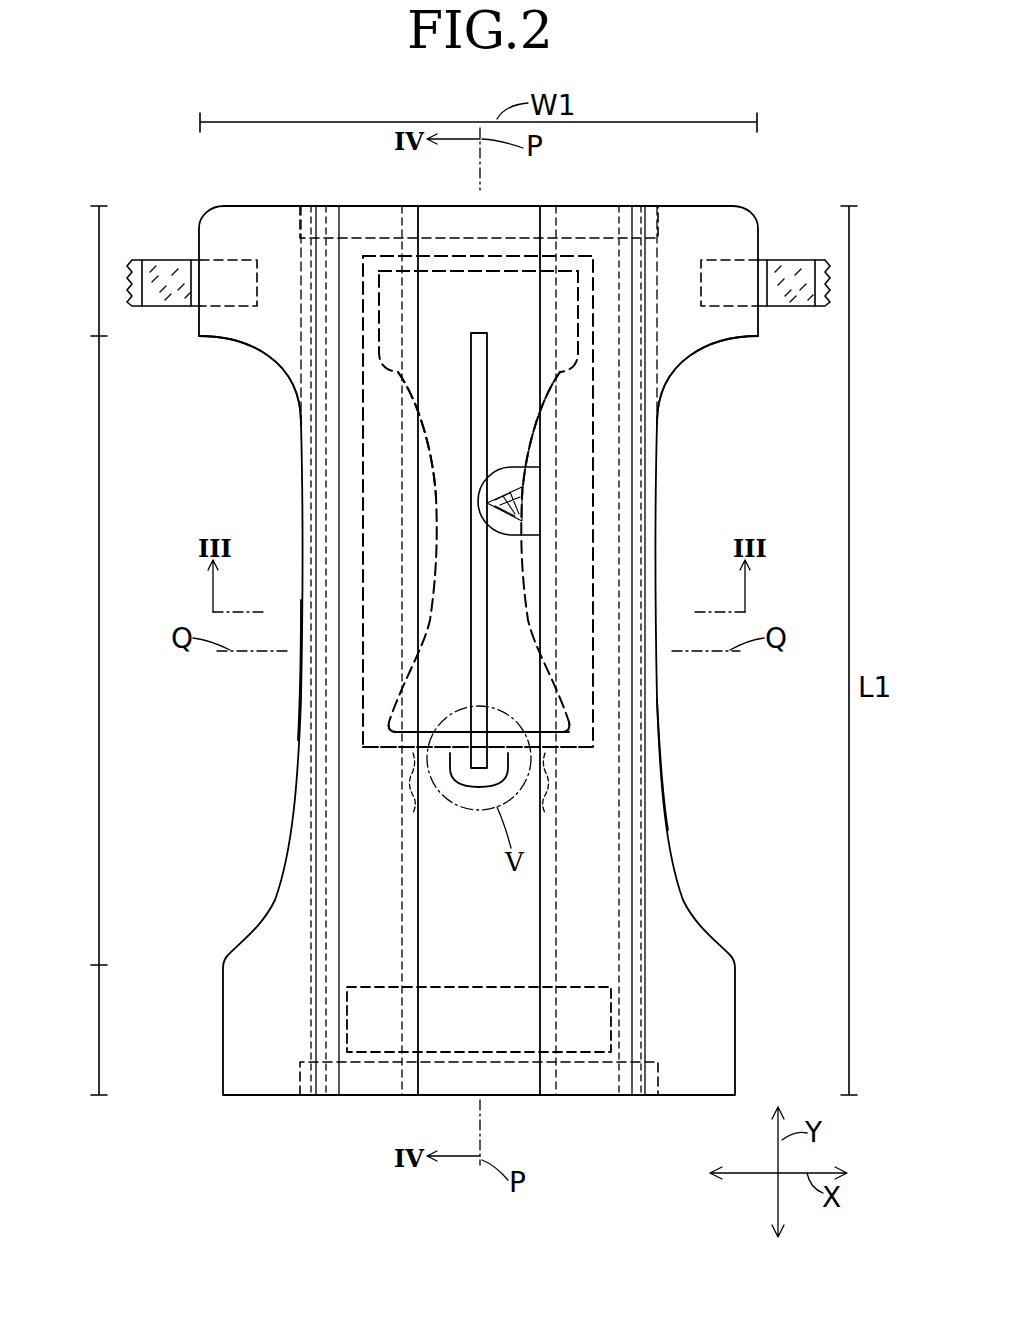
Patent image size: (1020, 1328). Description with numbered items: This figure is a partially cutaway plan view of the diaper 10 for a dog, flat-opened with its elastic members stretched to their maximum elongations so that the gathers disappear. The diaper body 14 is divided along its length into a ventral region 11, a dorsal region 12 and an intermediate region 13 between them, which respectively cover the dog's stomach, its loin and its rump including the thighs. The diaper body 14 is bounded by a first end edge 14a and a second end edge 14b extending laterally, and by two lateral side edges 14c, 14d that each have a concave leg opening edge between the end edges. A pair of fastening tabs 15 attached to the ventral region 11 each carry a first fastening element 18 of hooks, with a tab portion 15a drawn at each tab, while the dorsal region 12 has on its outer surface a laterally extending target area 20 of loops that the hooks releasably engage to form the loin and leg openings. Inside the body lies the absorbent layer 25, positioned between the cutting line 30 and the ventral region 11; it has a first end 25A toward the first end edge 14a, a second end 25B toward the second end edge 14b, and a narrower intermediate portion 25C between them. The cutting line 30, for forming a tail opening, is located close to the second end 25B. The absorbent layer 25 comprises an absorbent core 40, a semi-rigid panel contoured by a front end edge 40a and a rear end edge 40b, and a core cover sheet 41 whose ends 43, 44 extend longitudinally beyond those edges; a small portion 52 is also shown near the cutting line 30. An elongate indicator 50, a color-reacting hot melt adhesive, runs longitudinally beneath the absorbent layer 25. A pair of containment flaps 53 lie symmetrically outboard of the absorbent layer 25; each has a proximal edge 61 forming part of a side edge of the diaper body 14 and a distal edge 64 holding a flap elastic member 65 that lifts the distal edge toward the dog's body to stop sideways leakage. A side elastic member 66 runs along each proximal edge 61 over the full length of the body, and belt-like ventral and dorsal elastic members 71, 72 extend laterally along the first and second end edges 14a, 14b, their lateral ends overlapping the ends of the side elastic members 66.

The diaper 10 is at (752, 146).
The ventral region 11 is at (84, 271).
The dorsal region 12 is at (84, 1030).
The intermediate region 13 is at (84, 650).
The diaper body 14 is at (700, 371).
The first end edge 14a is at (577, 207).
The second end edge 14b is at (583, 1097).
The lateral side edge 14c is at (298, 700).
The lateral side edge 14d is at (667, 800).
The fastening tab 15 is at (164, 247).
The tape base portion 15a is at (240, 278).
The first fastening element 18 is at (168, 298).
The target area 20 is at (370, 1032).
The absorbent layer 25 is at (577, 662).
The first end 25A is at (495, 280).
The second end 25B is at (573, 702).
The intermediate portion 25C is at (460, 528).
The cutting line 30 is at (473, 790).
The absorbent core 40 is at (521, 510).
The front end edge 40a is at (392, 262).
The rear end edge 40b is at (363, 737).
The core cover sheet 41 is at (508, 485).
The end of core cover sheet 43 is at (445, 268).
The end of core cover sheet 44 is at (553, 740).
The indicator 50 is at (480, 418).
The slit end 52 is at (513, 767).
The containment flap 53 is at (272, 342).
The proximal edge 61 is at (333, 568).
The distal edge 64 is at (410, 830).
The flap elastic member 65 is at (556, 910).
The side elastic member 66 is at (327, 1007).
The ventral elastic member 71 is at (598, 220).
The dorsal elastic member 72 is at (500, 1080).